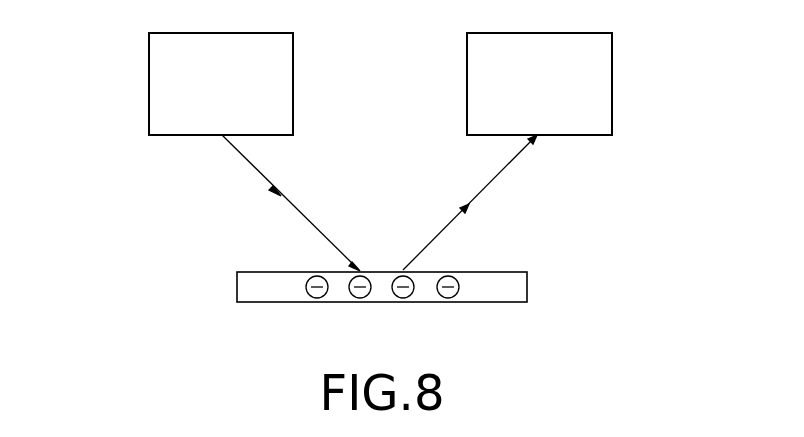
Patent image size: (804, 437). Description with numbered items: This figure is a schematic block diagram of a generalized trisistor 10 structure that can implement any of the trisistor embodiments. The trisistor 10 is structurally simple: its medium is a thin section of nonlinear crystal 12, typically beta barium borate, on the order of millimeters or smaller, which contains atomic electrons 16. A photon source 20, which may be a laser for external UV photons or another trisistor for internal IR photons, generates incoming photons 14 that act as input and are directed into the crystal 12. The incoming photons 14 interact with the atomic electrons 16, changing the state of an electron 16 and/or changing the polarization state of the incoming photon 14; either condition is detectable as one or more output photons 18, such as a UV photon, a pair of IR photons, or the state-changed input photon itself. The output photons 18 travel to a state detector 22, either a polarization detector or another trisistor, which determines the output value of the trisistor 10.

The trisistor 10 is at (480, 325).
The nonlinear crystal 12 is at (240, 287).
The incoming photons 14 is at (305, 215).
The atomic electrons 16 is at (311, 297).
The output photons 18 is at (457, 218).
The photon source 20 is at (149, 34).
The state detector 22 is at (612, 33).